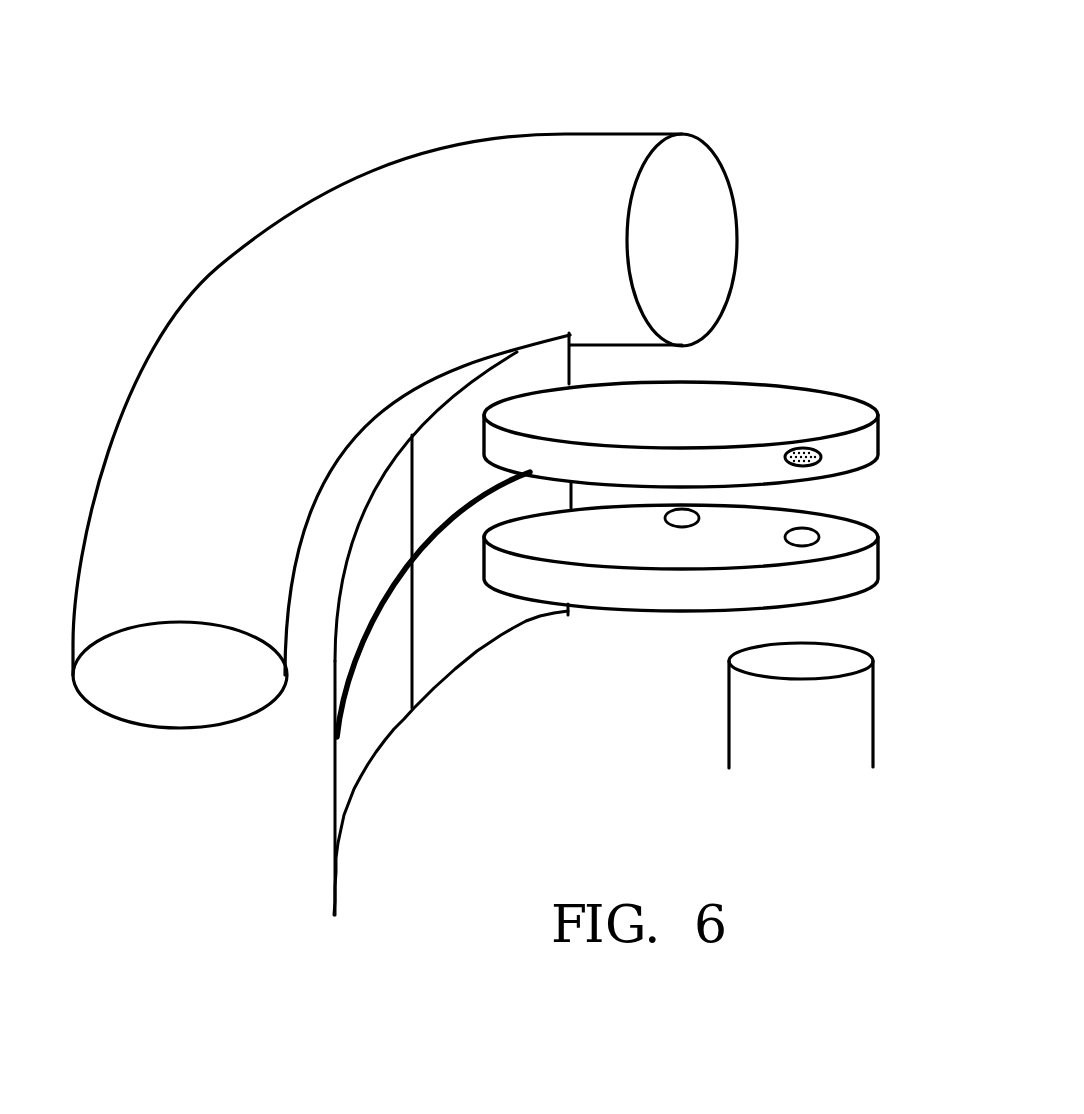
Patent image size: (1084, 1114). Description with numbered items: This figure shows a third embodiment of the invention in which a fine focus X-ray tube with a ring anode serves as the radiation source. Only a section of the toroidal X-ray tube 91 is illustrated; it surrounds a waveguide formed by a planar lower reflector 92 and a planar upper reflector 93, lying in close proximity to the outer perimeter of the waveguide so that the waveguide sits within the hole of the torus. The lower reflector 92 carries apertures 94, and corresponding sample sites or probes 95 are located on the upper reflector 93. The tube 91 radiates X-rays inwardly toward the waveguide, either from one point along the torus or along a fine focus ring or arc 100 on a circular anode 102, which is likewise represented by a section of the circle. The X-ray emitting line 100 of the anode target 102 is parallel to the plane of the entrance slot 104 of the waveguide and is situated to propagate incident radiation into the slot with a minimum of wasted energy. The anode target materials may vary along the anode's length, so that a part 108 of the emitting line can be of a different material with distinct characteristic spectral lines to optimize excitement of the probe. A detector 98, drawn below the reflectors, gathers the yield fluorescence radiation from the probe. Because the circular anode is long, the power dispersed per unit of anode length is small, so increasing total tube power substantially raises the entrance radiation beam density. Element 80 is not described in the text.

The toroidal X-ray tube 91 is at (557, 109).
The flexible sensor sheet 80 is at (449, 706).
The fine focus ring 100 is at (343, 777).
The circular anode 102 is at (500, 672).
The entrance slot 104 is at (480, 520).
The part of the X-ray emitting line 108 is at (533, 615).
The planar upper reflector 93 is at (848, 366).
The sample sites or probes 95 is at (848, 442).
The planar lower reflector 92 is at (858, 612).
The apertures 94 is at (842, 521).
The detector 98 is at (800, 742).